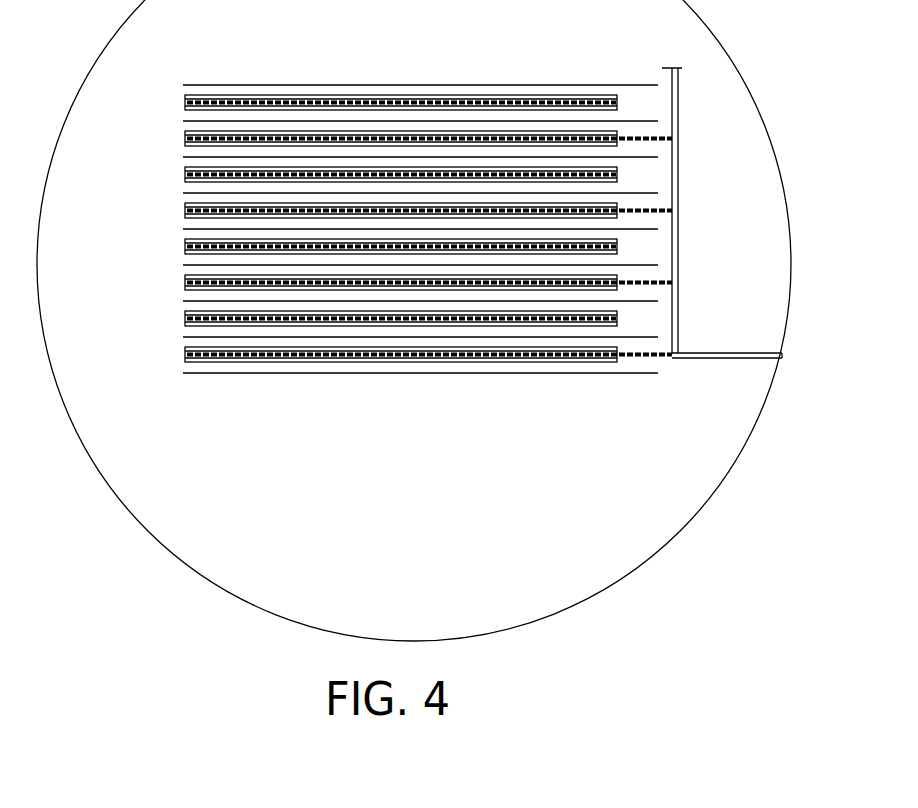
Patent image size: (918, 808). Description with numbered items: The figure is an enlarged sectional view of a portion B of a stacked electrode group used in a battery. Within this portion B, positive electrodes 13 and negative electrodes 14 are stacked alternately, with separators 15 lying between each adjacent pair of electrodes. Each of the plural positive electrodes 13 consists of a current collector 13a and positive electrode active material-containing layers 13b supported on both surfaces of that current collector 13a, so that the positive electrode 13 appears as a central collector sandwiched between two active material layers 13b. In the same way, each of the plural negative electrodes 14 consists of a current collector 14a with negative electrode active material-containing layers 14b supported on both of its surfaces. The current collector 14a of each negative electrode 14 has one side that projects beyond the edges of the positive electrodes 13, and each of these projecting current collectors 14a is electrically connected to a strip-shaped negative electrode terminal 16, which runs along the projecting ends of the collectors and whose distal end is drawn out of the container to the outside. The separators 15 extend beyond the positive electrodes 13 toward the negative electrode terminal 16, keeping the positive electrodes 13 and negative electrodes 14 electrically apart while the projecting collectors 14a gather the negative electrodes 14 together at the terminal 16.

The positive electrode 13 is at (176, 102).
The current collector 13a is at (187, 319).
The positive electrode active material-containing layer 13b is at (187, 315).
The negative electrode 14 is at (176, 138).
The current collector 14a is at (650, 137).
The negative electrode active material-containing layer 14b is at (187, 352).
The separator 15 is at (485, 82).
The negative electrode terminal 16 is at (722, 358).
The portion B is at (673, 537).